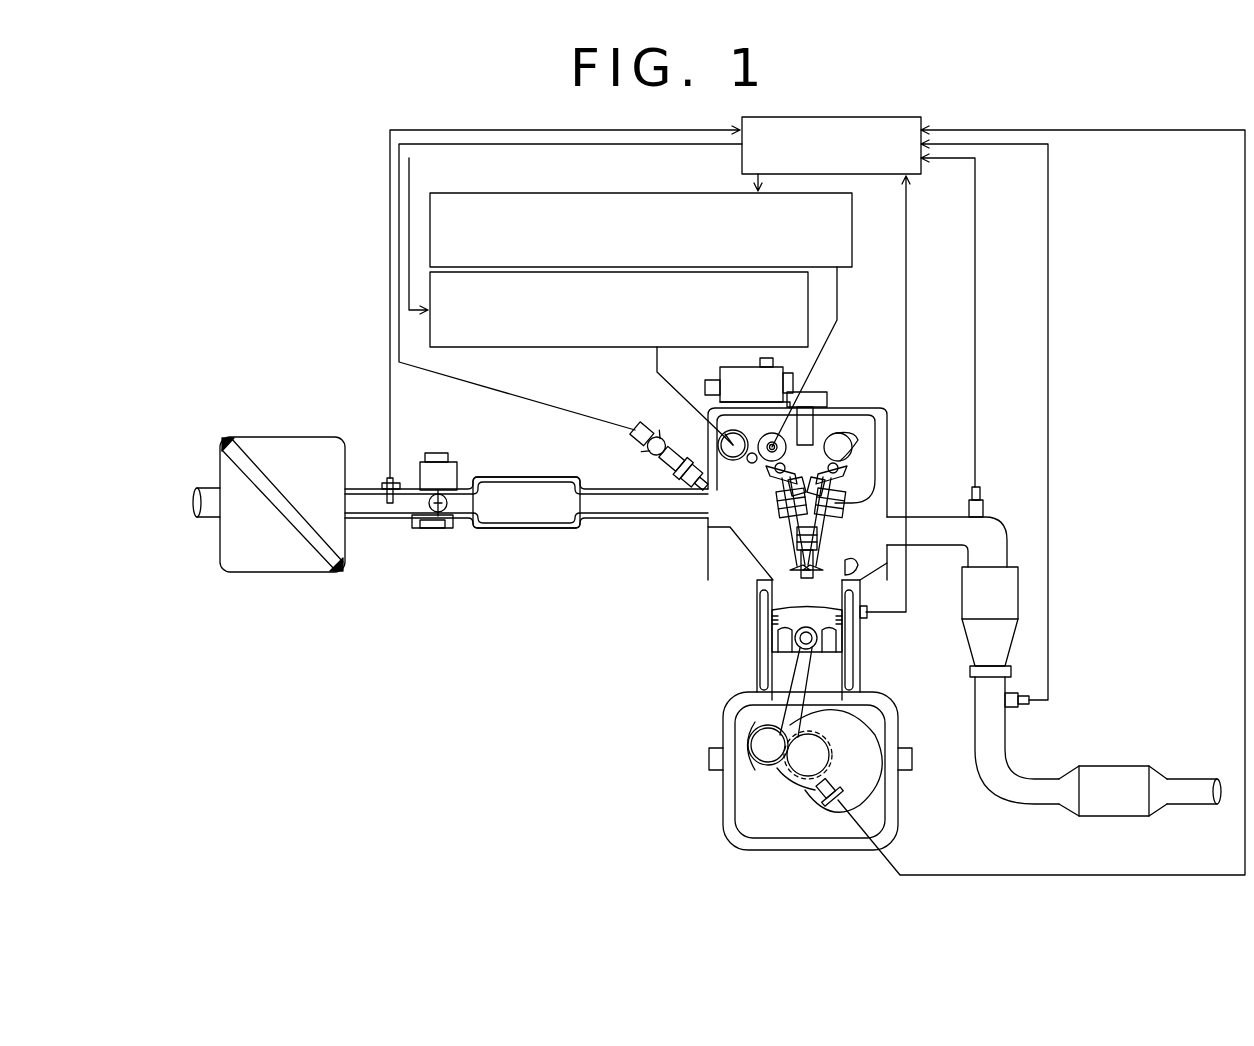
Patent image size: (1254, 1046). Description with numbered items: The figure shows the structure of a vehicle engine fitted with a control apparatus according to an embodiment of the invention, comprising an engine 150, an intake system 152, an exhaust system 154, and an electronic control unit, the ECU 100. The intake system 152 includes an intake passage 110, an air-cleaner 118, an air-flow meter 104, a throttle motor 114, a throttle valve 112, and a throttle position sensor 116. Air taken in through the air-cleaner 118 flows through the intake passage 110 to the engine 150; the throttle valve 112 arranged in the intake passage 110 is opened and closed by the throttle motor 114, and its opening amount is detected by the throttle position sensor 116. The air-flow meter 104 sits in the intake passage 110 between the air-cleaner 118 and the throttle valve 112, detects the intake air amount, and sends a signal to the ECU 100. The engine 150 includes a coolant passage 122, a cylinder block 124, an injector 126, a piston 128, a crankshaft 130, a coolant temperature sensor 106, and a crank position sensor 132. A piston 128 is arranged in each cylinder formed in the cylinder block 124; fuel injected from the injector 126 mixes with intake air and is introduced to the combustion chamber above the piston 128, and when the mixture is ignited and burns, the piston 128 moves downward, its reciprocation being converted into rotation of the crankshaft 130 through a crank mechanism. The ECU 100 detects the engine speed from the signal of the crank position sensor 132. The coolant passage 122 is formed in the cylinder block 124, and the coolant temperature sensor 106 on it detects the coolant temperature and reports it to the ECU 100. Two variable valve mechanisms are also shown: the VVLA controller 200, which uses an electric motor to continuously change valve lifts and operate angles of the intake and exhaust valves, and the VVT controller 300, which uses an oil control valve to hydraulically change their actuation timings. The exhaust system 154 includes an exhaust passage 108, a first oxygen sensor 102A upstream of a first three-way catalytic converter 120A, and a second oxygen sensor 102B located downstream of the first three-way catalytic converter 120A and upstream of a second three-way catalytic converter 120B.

The electronic control unit (ECU) 100 is at (862, 174).
The VVLA controller 200 is at (430, 228).
The VVT controller 300 is at (603, 347).
The air-flow meter 104 is at (382, 481).
The throttle motor 114 is at (447, 468).
The throttle valve 112 is at (455, 520).
The throttle position sensor 116 is at (428, 528).
The air-cleaner 118 is at (312, 572).
The intake passage 110 is at (630, 487).
The intake system 152 is at (537, 566).
The injector 126 is at (690, 495).
The engine 150 is at (873, 398).
The exhaust system 154 is at (954, 480).
The exhaust passage 108 is at (940, 515).
The first oxygen sensor 102A is at (1017, 478).
The second oxygen sensor 102B is at (1020, 708).
The first three-way catalytic converter 120A is at (1000, 585).
The second three-way catalytic converter 120B is at (1115, 766).
The coolant temperature sensor 106 is at (866, 614).
The coolant passage 122 is at (850, 665).
The cylinder block 124 is at (752, 588).
The piston 128 is at (777, 640).
The crankshaft 130 is at (858, 780).
The crank position sensor 132 is at (840, 800).